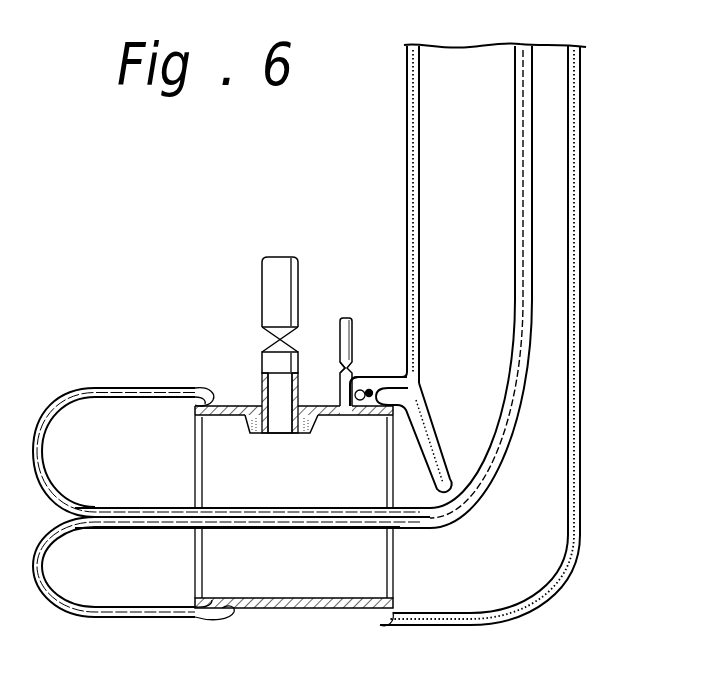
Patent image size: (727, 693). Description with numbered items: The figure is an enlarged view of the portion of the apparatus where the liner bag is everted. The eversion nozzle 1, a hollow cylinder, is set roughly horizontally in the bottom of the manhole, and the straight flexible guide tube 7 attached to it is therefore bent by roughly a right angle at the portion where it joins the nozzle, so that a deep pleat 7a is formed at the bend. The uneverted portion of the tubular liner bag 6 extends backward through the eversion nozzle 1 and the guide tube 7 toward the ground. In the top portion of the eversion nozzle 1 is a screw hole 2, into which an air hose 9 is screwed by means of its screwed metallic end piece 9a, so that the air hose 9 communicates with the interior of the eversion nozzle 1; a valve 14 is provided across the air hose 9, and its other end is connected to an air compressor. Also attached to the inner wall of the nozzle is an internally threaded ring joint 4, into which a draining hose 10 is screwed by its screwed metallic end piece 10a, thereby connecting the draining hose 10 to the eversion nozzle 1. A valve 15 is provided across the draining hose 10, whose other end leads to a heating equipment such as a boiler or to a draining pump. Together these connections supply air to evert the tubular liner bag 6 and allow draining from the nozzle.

The eversion nozzle 1 is at (273, 610).
The screw hole 2 is at (347, 416).
The ring joint 4 is at (248, 433).
The tubular liner bag 6 is at (116, 388).
The guide tube 7 is at (586, 360).
The deep pleat 7a is at (427, 426).
The air hose 9 is at (353, 337).
The screwed metallic end piece 9a is at (405, 370).
The draining hose 10 is at (261, 257).
The screwed metallic end piece 10a is at (262, 364).
The valve 14 is at (337, 373).
The valve 15 is at (262, 338).